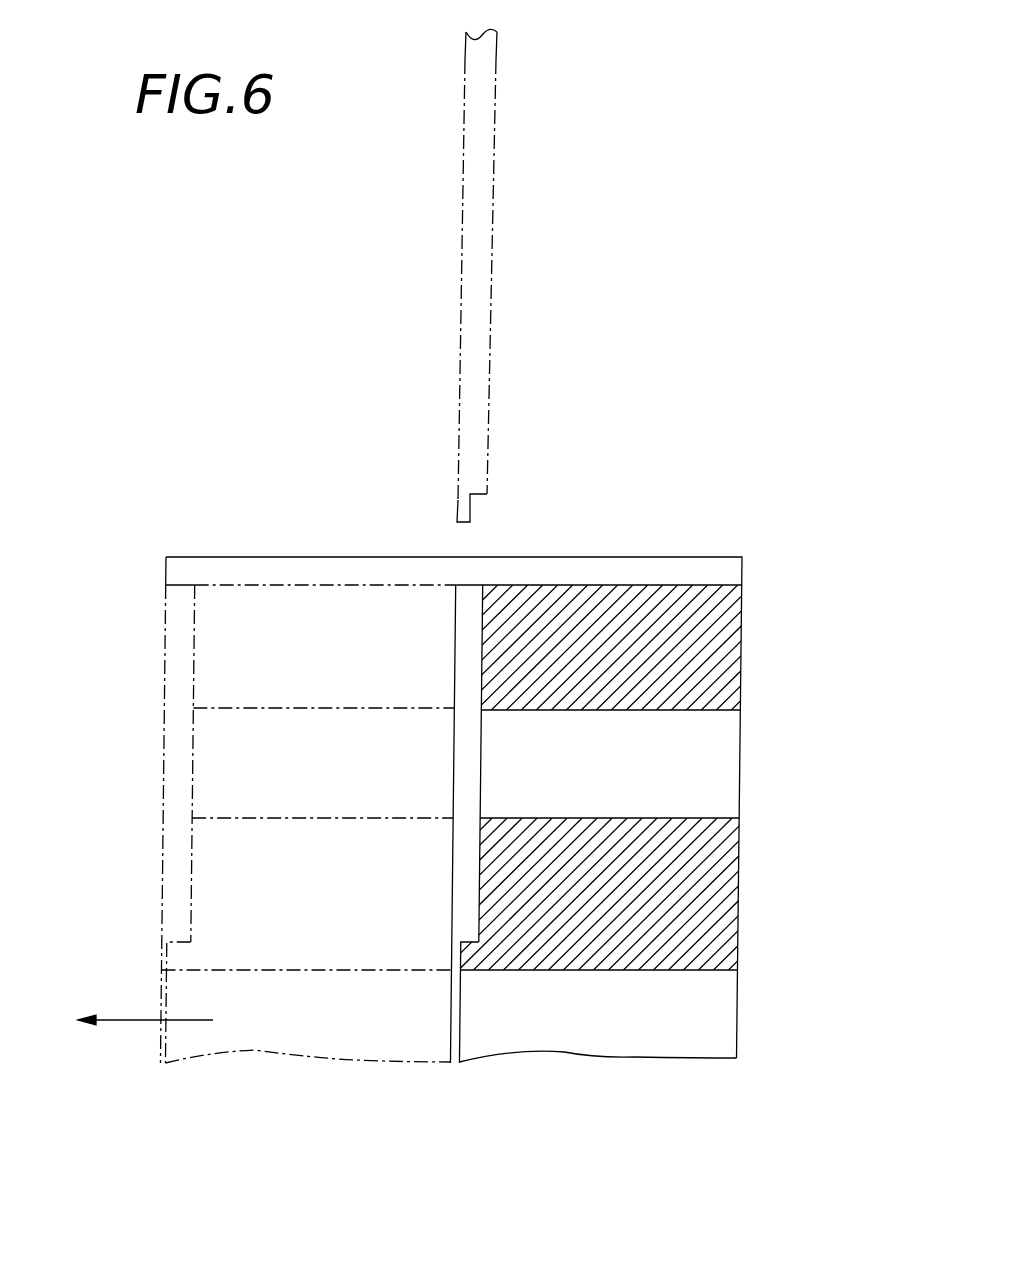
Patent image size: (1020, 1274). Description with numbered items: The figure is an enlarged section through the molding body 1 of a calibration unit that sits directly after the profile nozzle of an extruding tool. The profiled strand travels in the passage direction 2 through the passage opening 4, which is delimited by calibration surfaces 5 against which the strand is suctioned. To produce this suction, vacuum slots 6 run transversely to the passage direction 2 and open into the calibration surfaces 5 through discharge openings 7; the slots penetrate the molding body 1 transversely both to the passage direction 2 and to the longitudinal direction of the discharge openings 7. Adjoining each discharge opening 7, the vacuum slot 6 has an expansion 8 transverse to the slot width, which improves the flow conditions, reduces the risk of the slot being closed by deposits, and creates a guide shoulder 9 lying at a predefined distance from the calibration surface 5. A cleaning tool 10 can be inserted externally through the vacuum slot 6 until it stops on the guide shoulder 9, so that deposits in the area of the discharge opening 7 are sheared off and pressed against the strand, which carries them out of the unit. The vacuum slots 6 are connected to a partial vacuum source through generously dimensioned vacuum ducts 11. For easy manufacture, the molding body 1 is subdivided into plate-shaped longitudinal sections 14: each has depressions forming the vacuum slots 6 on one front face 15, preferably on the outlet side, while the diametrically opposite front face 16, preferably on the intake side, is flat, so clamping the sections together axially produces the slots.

The molding body 1 is at (768, 538).
The passage direction 2 is at (130, 1022).
The passage opening 4 is at (698, 995).
The calibration surfaces 5 is at (335, 972).
The vacuum slots 6 is at (165, 958).
The discharge openings 7 is at (455, 970).
The expansion 8 is at (182, 742).
The guide shoulder 9 is at (165, 940).
The cleaning tool 10 is at (475, 365).
The vacuum ducts 11 is at (652, 765).
The longitudinal sections 14 is at (267, 612).
The front face 15 is at (455, 643).
The front face 16 is at (740, 663).